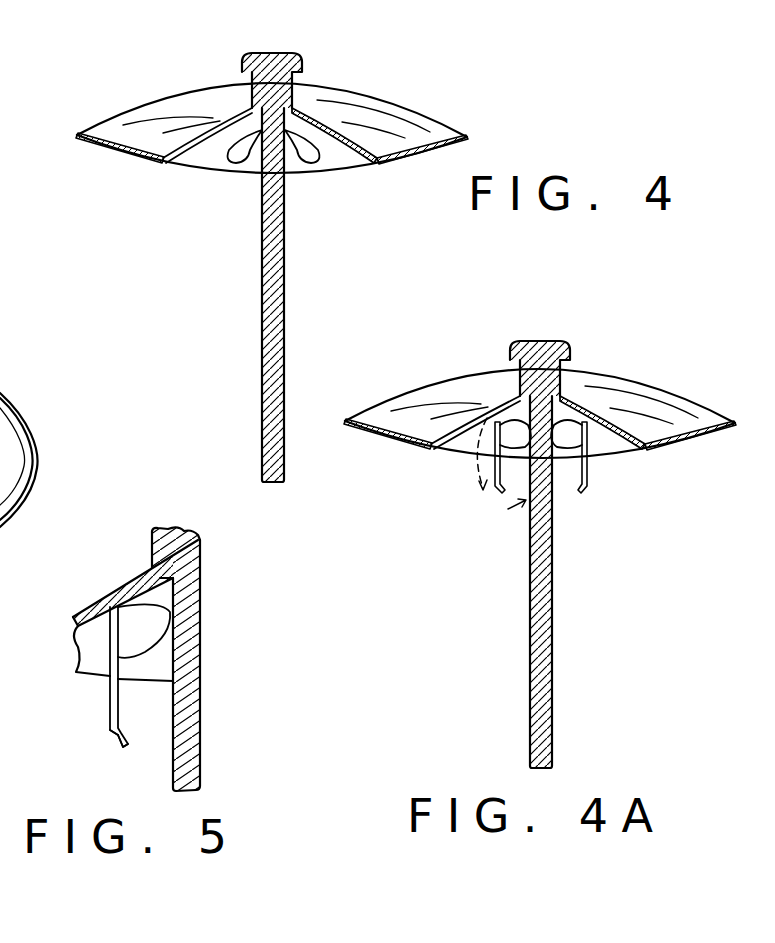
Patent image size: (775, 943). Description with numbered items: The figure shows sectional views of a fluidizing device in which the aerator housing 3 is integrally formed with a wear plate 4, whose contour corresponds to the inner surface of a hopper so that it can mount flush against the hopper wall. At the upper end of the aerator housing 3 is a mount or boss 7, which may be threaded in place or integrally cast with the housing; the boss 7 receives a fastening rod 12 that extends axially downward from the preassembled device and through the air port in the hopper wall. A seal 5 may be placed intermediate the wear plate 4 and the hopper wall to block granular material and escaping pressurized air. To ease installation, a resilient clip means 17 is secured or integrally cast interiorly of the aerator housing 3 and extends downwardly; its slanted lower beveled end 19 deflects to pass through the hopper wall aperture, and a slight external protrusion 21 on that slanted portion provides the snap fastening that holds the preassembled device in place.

In FIG. 4, the aerator housing 3 is at (350, 147).
In FIG. 4A, the aerator housing 3 is at (540, 399).
In FIG. 5, the aerator housing 3 is at (122, 590).
In FIG. 4, the wear plate 4 is at (437, 140).
In FIG. 4A, the wear plate 4 is at (540, 415).
In FIG. 5, the wear plate 4 is at (0, 393).
In FIG. 4A, the seal 5 is at (492, 474).
In FIG. 4, the boss 7 is at (300, 93).
In FIG. 4A, the boss 7 is at (561, 544).
In FIG. 4, the fastening rod 12 is at (284, 328).
In FIG. 4A, the fastening rod 12 is at (570, 582).
In FIG. 5, the fastening rod 12 is at (202, 712).
In FIG. 4A, the clip means 17 is at (581, 457).
In FIG. 5, the clip means 17 is at (110, 695).
In FIG. 5, the lower beveled end 19 is at (110, 744).
In FIG. 5, the external protrusion 21 is at (112, 738).